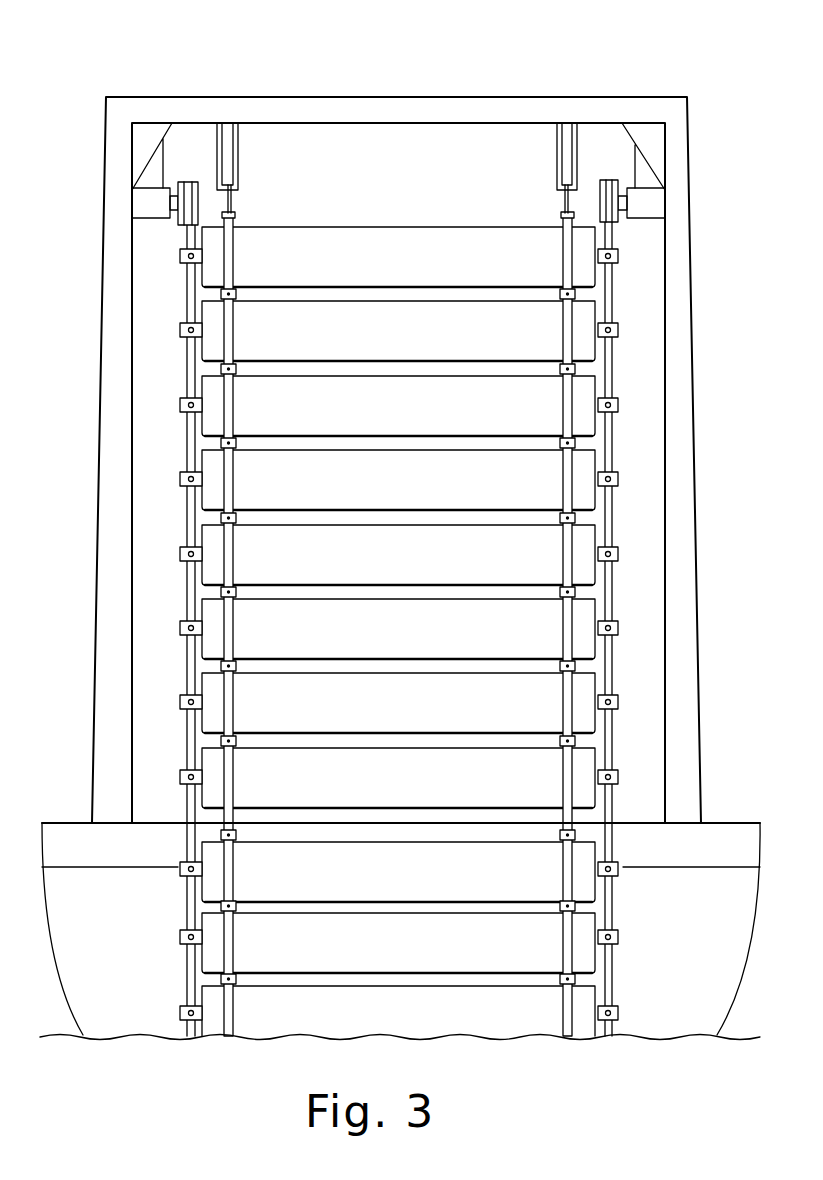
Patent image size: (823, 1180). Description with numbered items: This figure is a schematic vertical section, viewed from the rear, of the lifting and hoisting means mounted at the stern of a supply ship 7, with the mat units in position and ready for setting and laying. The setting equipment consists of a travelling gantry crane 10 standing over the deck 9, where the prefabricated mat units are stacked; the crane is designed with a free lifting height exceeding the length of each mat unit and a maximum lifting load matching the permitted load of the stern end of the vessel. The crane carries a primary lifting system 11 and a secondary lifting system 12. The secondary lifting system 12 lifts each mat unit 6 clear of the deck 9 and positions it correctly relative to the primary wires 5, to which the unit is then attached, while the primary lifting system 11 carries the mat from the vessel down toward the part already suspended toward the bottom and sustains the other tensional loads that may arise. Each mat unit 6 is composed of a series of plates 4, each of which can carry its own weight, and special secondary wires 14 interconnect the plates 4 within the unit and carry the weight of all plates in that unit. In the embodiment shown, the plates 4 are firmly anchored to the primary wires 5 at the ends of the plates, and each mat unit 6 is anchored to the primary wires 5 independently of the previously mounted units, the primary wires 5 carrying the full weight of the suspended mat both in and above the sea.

The plate 4 is at (537, 693).
The primary wire 5 is at (186, 370).
The mat unit 6 is at (262, 510).
The supply ship 7 is at (647, 1000).
The deck 9 is at (719, 823).
The travelling gantry crane 10 is at (105, 284).
The primary lifting system 11 is at (594, 190).
The secondary lifting system 12 is at (240, 195).
The secondary wire 14 is at (228, 422).